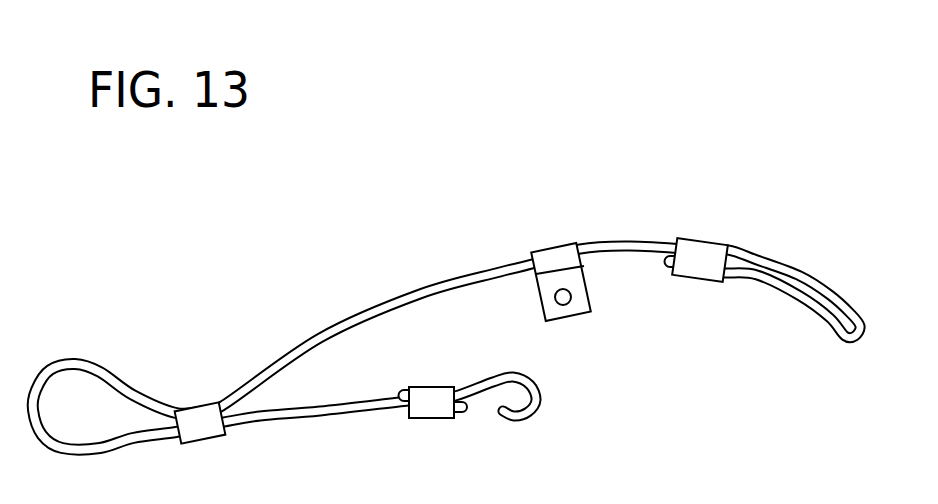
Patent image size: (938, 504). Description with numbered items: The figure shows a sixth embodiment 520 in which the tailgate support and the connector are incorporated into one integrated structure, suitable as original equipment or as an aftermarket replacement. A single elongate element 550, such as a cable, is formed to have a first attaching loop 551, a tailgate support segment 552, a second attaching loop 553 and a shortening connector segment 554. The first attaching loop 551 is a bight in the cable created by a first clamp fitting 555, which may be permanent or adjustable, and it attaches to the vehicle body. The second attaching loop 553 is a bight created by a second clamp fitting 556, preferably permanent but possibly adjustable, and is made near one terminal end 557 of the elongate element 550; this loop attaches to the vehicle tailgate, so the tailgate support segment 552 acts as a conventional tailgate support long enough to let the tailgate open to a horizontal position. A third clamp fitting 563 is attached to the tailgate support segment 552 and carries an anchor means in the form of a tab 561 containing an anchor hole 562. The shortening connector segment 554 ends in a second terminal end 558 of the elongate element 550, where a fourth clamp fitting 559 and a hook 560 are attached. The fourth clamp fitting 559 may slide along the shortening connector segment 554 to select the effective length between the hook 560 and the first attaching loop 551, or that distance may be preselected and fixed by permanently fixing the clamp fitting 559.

The sixth embodiment 520 is at (686, 87).
The elongate element 550 is at (299, 321).
The first attaching loop 551 is at (68, 358).
The tailgate support segment 552 is at (503, 267).
The second attaching loop 553 is at (850, 336).
The shortening connector segment 554 is at (296, 422).
The first clamp fitting 555 is at (197, 405).
The second clamp fitting 556 is at (678, 238).
The terminal end 557 is at (666, 261).
The second terminal end 558 is at (467, 412).
The fourth clamp fitting 559 is at (417, 418).
The hook 560 is at (538, 405).
The tab 561 is at (544, 314).
The anchor hole 562 is at (572, 296).
The third clamp fitting 563 is at (594, 289).